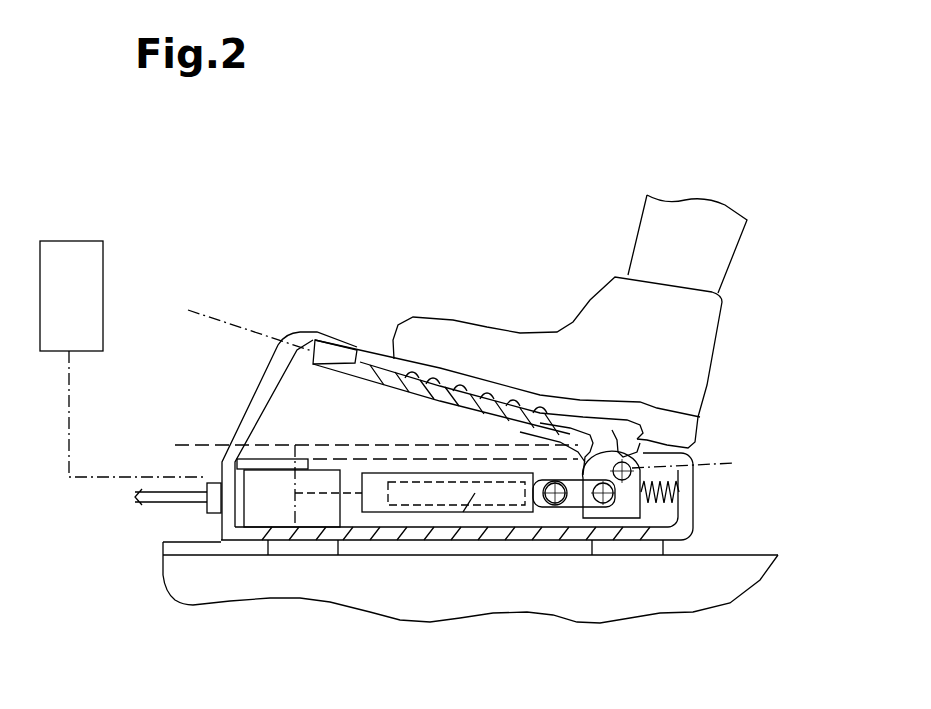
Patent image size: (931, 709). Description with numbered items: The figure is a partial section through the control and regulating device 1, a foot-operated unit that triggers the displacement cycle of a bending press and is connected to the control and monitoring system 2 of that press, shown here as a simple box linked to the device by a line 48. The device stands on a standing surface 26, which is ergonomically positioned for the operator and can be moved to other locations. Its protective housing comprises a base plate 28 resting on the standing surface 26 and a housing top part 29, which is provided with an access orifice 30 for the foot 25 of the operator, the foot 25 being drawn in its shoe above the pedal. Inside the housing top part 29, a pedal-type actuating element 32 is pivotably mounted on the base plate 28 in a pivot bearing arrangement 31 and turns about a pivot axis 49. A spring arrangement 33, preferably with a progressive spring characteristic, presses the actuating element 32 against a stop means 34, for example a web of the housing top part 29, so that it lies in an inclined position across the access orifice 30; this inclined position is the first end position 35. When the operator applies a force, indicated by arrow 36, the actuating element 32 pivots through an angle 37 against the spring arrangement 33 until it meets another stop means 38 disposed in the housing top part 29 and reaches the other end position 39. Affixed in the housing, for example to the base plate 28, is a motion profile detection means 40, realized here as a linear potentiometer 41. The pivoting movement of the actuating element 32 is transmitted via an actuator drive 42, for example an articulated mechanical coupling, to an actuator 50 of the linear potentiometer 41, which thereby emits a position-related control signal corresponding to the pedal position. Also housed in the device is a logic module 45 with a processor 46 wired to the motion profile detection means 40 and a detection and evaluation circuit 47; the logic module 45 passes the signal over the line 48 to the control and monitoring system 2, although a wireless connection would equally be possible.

The control and regulating device 1 is at (338, 247).
The control and monitoring system 2 is at (75, 230).
The foot 25 is at (723, 353).
The standing surface 26 is at (727, 552).
The base plate 28 is at (374, 540).
The housing top part 29 is at (262, 392).
The access orifice 30 is at (368, 333).
The pivot bearing arrangement 31 is at (617, 440).
The actuating element 32 is at (470, 400).
The spring arrangement 33 is at (645, 468).
The stop means 34 is at (337, 340).
The first end position 35 is at (212, 318).
The arrow 36 is at (410, 410).
The angle 37 is at (338, 395).
The stop means 38 is at (233, 466).
The end position 39 is at (183, 447).
The motion profile detection means 40 is at (415, 522).
The linear potentiometer 41 is at (507, 510).
The actuator drive 42 is at (567, 518).
The logic module 45 is at (255, 545).
The processor 46 is at (313, 483).
The detection and evaluation circuit 47 is at (263, 511).
The line 48 is at (133, 498).
The pivot axis 49 is at (710, 462).
The actuator 50 is at (463, 512).